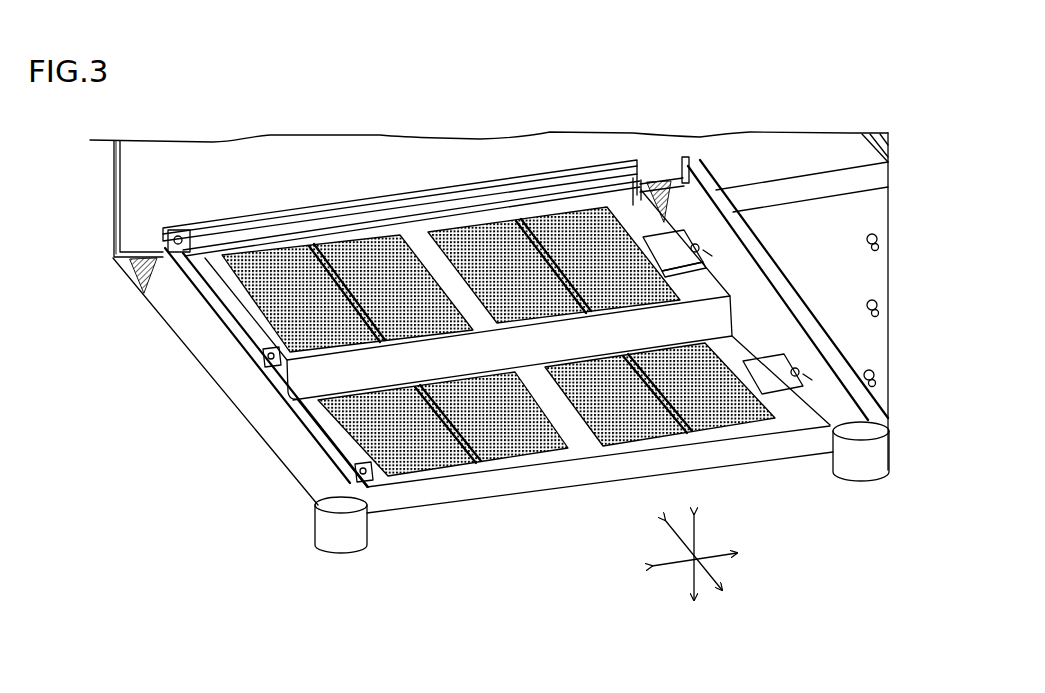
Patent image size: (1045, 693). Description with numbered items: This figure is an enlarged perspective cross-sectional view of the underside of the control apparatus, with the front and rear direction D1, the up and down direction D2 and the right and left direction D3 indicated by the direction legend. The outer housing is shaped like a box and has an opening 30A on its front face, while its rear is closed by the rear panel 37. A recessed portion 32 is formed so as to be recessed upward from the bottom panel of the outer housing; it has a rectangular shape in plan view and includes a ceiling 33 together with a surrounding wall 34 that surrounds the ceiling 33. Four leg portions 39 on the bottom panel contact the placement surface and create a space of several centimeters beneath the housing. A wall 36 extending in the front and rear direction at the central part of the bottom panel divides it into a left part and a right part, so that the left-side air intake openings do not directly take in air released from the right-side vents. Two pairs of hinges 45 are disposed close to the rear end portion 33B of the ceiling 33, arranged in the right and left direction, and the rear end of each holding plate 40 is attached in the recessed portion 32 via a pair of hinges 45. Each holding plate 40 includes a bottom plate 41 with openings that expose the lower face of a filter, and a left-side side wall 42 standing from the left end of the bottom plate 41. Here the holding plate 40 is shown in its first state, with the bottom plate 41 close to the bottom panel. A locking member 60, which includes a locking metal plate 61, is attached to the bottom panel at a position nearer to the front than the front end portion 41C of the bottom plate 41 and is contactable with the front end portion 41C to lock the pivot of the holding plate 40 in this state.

The opening 30A is at (793, 297).
The recessed portion 32 is at (300, 546).
The ceiling 33 is at (287, 460).
The rear end portion 33B is at (212, 292).
The surrounding wall 34 is at (333, 460).
The wall 36 is at (293, 413).
The rear panel 37 is at (113, 190).
The leg portion 39 is at (347, 540).
The holding plate 40 is at (417, 235).
The bottom plate 41 is at (625, 203).
The front end portion 41C is at (660, 181).
The left-side side wall 42 is at (501, 196).
The hinge 45 is at (175, 262).
The locking member 60 is at (712, 230).
The locking metal plate 61 is at (708, 273).
The front and rear direction D1 is at (710, 550).
The up and down direction D2 is at (690, 580).
The right and left direction D3 is at (703, 570).